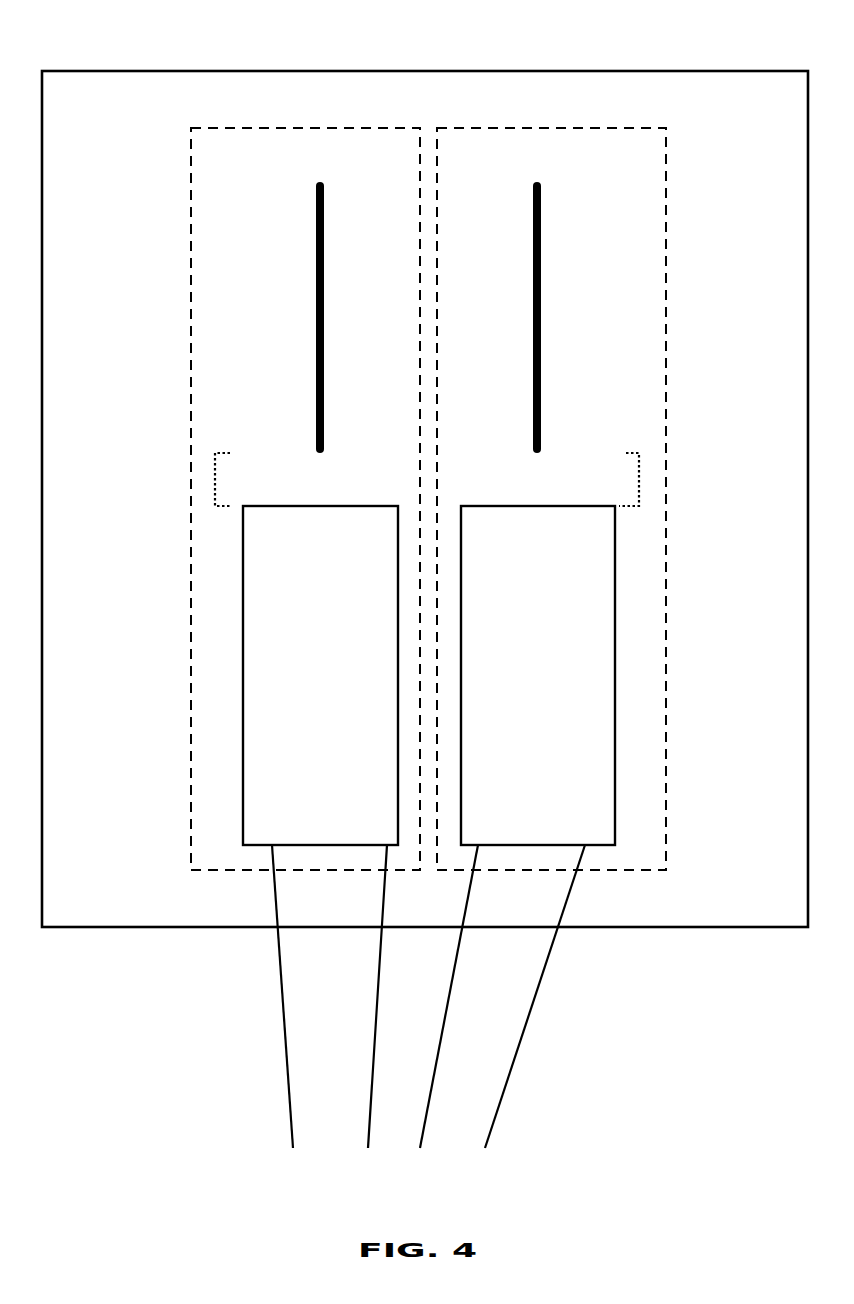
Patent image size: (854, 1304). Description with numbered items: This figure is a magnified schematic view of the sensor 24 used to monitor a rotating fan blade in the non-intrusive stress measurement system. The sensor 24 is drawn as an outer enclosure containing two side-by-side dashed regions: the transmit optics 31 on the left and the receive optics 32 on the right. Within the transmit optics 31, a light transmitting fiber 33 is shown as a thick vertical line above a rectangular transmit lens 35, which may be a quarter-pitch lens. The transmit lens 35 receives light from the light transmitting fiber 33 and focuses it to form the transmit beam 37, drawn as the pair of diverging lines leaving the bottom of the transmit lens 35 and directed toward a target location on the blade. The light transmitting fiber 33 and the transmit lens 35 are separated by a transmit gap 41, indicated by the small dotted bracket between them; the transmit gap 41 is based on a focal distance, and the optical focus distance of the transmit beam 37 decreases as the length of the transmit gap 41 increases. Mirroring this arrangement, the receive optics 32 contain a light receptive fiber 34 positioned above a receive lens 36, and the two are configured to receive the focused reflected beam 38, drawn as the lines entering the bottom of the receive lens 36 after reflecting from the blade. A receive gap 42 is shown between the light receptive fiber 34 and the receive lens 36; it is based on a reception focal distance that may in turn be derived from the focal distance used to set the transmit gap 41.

The sensor 24 is at (713, 71).
The transmit optics 31 is at (191, 218).
The receive optics 32 is at (666, 218).
The light transmitting fiber 33 is at (317, 313).
The light receptive fiber 34 is at (541, 306).
The transmit lens 35 is at (243, 686).
The receive lens 36 is at (615, 688).
The transmit beam 37 is at (296, 975).
The focused reflected beam 38 is at (522, 975).
The transmit gap 41 is at (215, 480).
The receive gap 42 is at (639, 480).